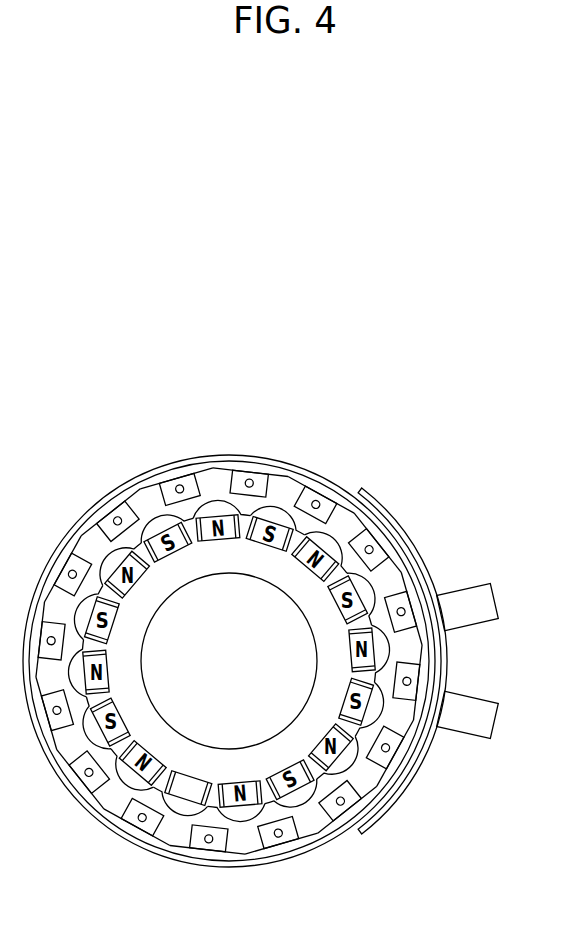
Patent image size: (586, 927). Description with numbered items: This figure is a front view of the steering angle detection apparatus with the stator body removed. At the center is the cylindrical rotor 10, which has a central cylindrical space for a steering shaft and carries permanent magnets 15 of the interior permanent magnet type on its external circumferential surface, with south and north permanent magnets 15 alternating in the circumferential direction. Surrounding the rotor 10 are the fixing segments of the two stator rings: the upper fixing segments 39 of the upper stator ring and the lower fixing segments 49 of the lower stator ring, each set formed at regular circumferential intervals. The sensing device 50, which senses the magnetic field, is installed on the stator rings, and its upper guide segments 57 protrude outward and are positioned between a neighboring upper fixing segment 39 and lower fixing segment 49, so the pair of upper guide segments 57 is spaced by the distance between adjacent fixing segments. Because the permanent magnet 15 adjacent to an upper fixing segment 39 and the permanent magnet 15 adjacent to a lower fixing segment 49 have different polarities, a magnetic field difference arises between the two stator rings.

The rotor 10 is at (252, 770).
The permanent magnet 15 is at (193, 797).
The upper fixing segment 39 is at (397, 603).
The lower fixing segment 49 is at (408, 673).
The sensing device 50 is at (445, 658).
The upper guide segment 57 is at (477, 605).